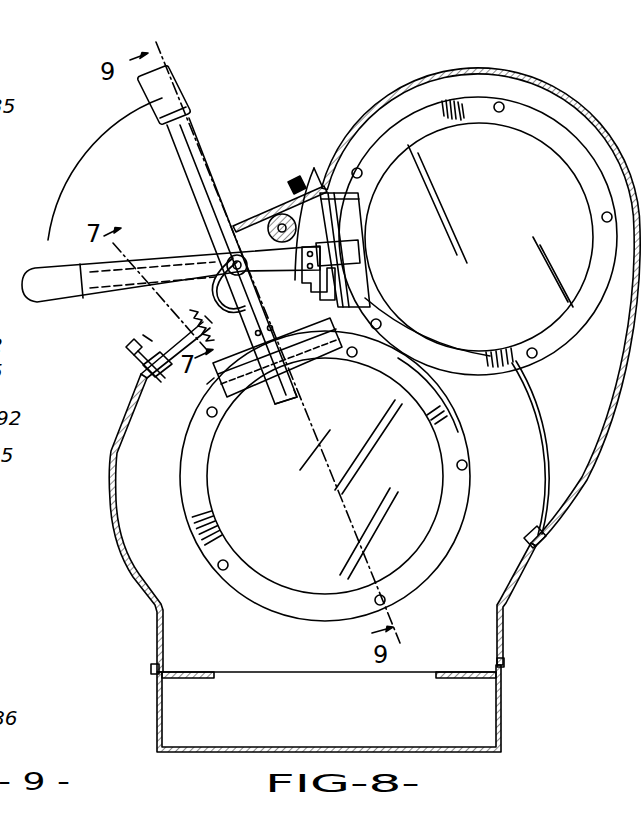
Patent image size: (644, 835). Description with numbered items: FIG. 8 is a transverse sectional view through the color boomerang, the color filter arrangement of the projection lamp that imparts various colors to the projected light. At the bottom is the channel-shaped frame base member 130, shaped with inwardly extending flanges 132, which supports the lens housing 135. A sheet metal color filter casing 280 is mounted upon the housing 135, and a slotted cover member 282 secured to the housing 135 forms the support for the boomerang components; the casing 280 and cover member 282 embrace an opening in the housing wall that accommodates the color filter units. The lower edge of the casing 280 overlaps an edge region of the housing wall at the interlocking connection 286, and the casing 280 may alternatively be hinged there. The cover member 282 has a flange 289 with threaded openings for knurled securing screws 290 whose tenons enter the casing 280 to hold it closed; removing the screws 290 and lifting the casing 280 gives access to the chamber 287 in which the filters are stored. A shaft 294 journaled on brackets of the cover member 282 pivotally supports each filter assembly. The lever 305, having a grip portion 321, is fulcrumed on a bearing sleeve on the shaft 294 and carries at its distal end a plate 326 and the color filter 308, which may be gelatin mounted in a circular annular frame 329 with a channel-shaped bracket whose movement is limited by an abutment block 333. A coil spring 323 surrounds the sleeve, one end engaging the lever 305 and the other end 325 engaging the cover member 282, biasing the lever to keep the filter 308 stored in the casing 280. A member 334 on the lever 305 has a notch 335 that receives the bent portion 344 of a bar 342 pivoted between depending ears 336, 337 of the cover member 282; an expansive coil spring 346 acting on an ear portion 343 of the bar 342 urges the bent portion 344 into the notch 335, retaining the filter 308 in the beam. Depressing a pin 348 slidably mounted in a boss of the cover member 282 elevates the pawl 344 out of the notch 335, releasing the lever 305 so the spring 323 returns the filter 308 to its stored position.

The frame base member 130 is at (503, 690).
The flanges 132 is at (195, 680).
The lens housing 135 is at (125, 543).
The color filter casing 280 is at (532, 75).
The cover member 282 is at (270, 207).
The interlocking connection 286 is at (551, 545).
The chamber 287 is at (630, 346).
The flange 289 is at (318, 172).
The knurled securing screws 290 is at (293, 181).
The shaft 294 is at (266, 229).
The lever 305 is at (199, 128).
The color filter 308 is at (537, 224).
The grip portion 321 is at (178, 72).
The coil spring 323 is at (227, 259).
The spring end 325 is at (205, 290).
The plate 326 is at (211, 383).
The annular frame 329 is at (275, 601).
The abutment block 333 is at (362, 320).
The notched member 334 is at (276, 338).
The notch 335 is at (175, 359).
The depending ear 336 is at (205, 319).
The depending ear 337 is at (145, 337).
The bar 342 is at (133, 352).
The ear portion 343 is at (261, 300).
The bent portion 344 is at (266, 389).
The coil spring 346 is at (198, 308).
The pin 348 is at (143, 370).